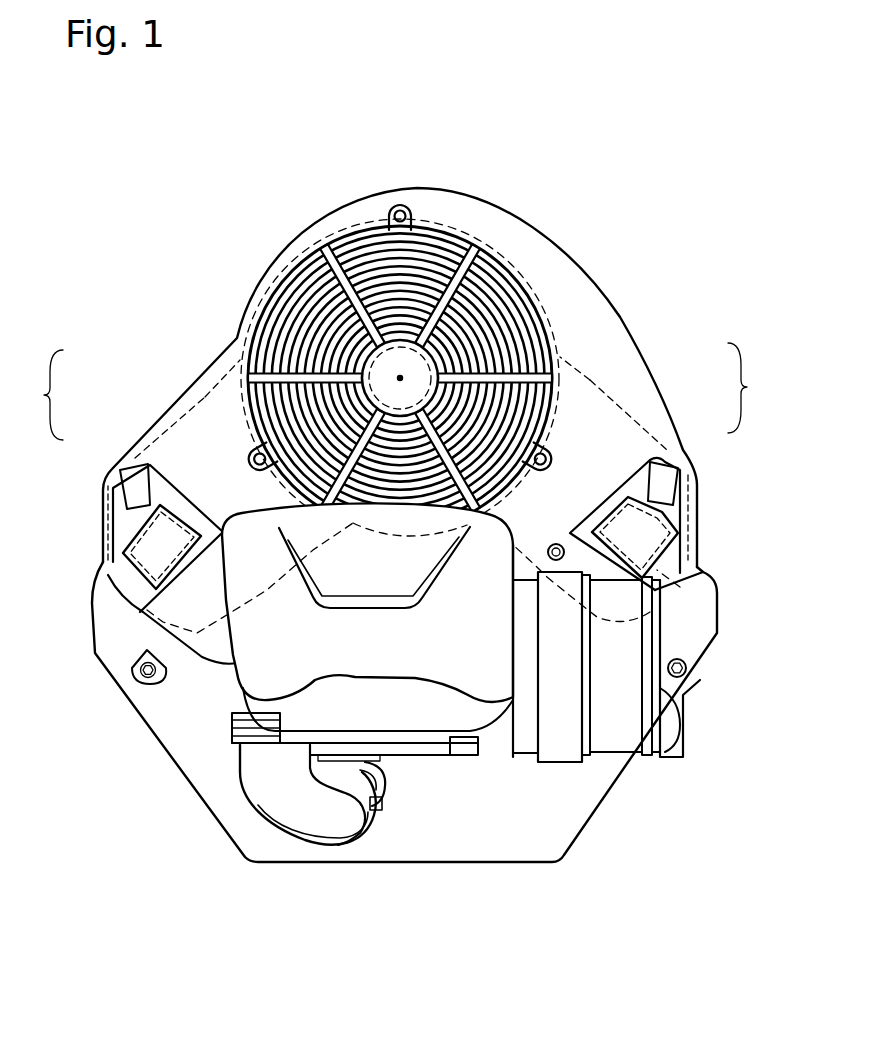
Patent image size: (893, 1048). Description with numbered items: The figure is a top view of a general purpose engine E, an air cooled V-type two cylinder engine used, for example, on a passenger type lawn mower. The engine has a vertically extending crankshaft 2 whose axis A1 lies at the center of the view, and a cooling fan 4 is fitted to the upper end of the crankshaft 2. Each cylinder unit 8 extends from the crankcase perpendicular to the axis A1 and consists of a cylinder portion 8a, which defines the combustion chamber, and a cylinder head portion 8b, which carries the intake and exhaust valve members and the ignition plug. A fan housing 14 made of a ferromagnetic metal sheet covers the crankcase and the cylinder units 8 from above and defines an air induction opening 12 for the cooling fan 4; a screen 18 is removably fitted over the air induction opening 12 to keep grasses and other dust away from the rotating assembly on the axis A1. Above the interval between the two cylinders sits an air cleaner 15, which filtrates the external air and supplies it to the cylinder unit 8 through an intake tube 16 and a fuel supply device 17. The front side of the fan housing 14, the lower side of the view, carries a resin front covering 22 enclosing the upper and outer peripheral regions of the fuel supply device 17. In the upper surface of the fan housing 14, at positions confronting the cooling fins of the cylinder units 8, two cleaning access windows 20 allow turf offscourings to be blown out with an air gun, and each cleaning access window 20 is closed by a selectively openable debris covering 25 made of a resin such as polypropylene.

The crankshaft 2 is at (433, 320).
The cooling fan 4 is at (482, 245).
The air induction opening 12 is at (378, 272).
The screen 18 is at (328, 260).
The axis A1 is at (403, 375).
The general purpose engine E is at (664, 244).
The fan housing 14 is at (600, 345).
The cylinder unit 8 is at (392, 391).
The cylinder portion 8a is at (205, 397).
The cylinder head portion 8b is at (135, 458).
The debris covering 25 is at (152, 540).
The cleaning access window 20 is at (130, 600).
The intake tube 16 is at (258, 793).
The fuel supply device 17 is at (373, 790).
The air cleaner 15 is at (568, 737).
The front covering 22 is at (553, 828).